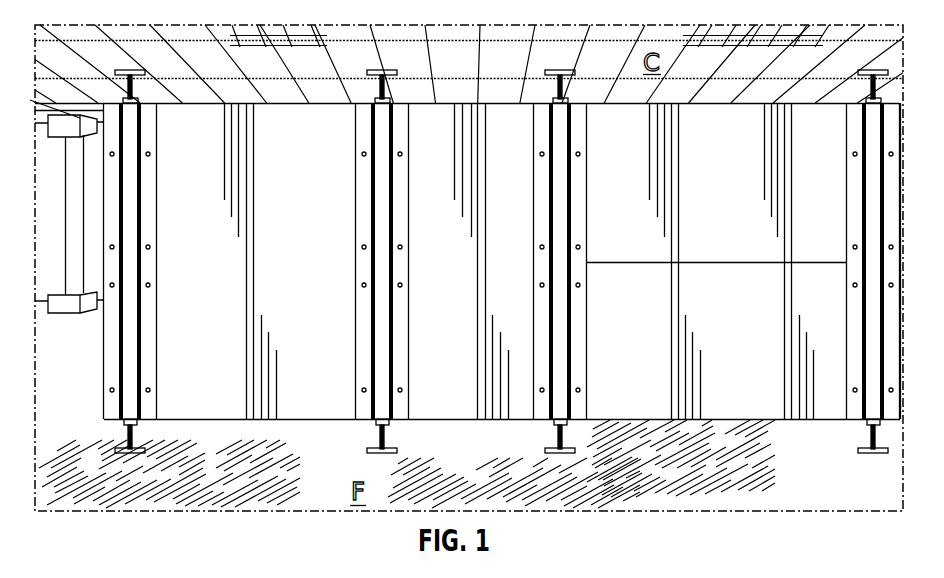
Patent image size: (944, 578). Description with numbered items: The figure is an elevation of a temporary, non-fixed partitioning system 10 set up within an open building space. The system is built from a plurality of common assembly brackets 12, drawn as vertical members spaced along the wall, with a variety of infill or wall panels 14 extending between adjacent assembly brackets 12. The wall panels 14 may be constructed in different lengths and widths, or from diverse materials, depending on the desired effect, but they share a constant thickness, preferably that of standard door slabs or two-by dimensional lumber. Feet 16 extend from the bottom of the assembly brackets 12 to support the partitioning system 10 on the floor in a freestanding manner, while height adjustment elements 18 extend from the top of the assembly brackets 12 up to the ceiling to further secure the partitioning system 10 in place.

The temporary, non-fixed partitioning system 10 is at (103, 262).
The common assembly bracket 12 is at (108, 325).
The wall panel 14 is at (473, 118).
The foot 16 is at (127, 442).
The height adjustment element 18 is at (134, 96).